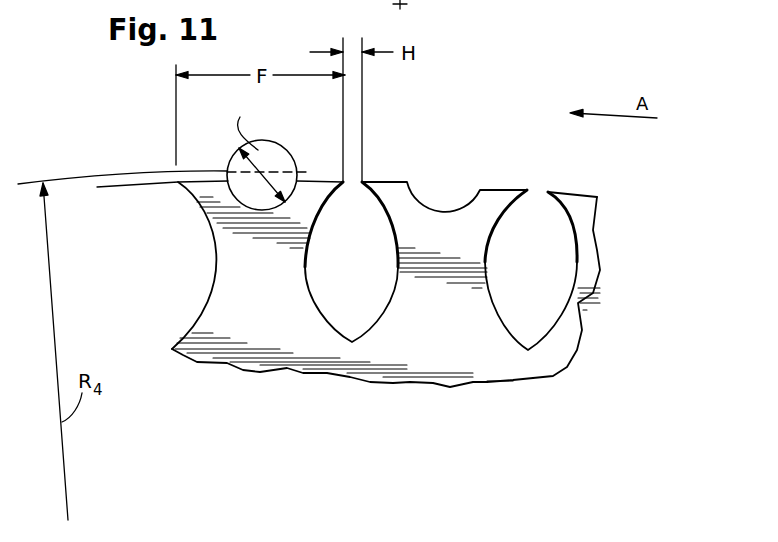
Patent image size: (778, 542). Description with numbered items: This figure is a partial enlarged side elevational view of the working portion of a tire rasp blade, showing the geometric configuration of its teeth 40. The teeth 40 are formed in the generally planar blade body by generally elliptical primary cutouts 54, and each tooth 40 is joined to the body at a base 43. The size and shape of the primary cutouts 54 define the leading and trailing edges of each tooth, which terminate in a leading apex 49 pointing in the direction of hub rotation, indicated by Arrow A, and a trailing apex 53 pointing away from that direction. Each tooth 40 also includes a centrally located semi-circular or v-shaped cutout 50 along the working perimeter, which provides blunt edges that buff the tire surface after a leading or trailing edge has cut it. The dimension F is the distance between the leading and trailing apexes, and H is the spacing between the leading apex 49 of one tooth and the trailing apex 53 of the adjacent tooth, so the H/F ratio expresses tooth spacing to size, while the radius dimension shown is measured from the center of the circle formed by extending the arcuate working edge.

The tooth 40 is at (457, 318).
The base 43 is at (295, 343).
The leading apex 49 is at (549, 192).
The cutout 50 is at (252, 198).
The trailing apex 53 is at (527, 190).
The primary cutout 54 is at (369, 261).